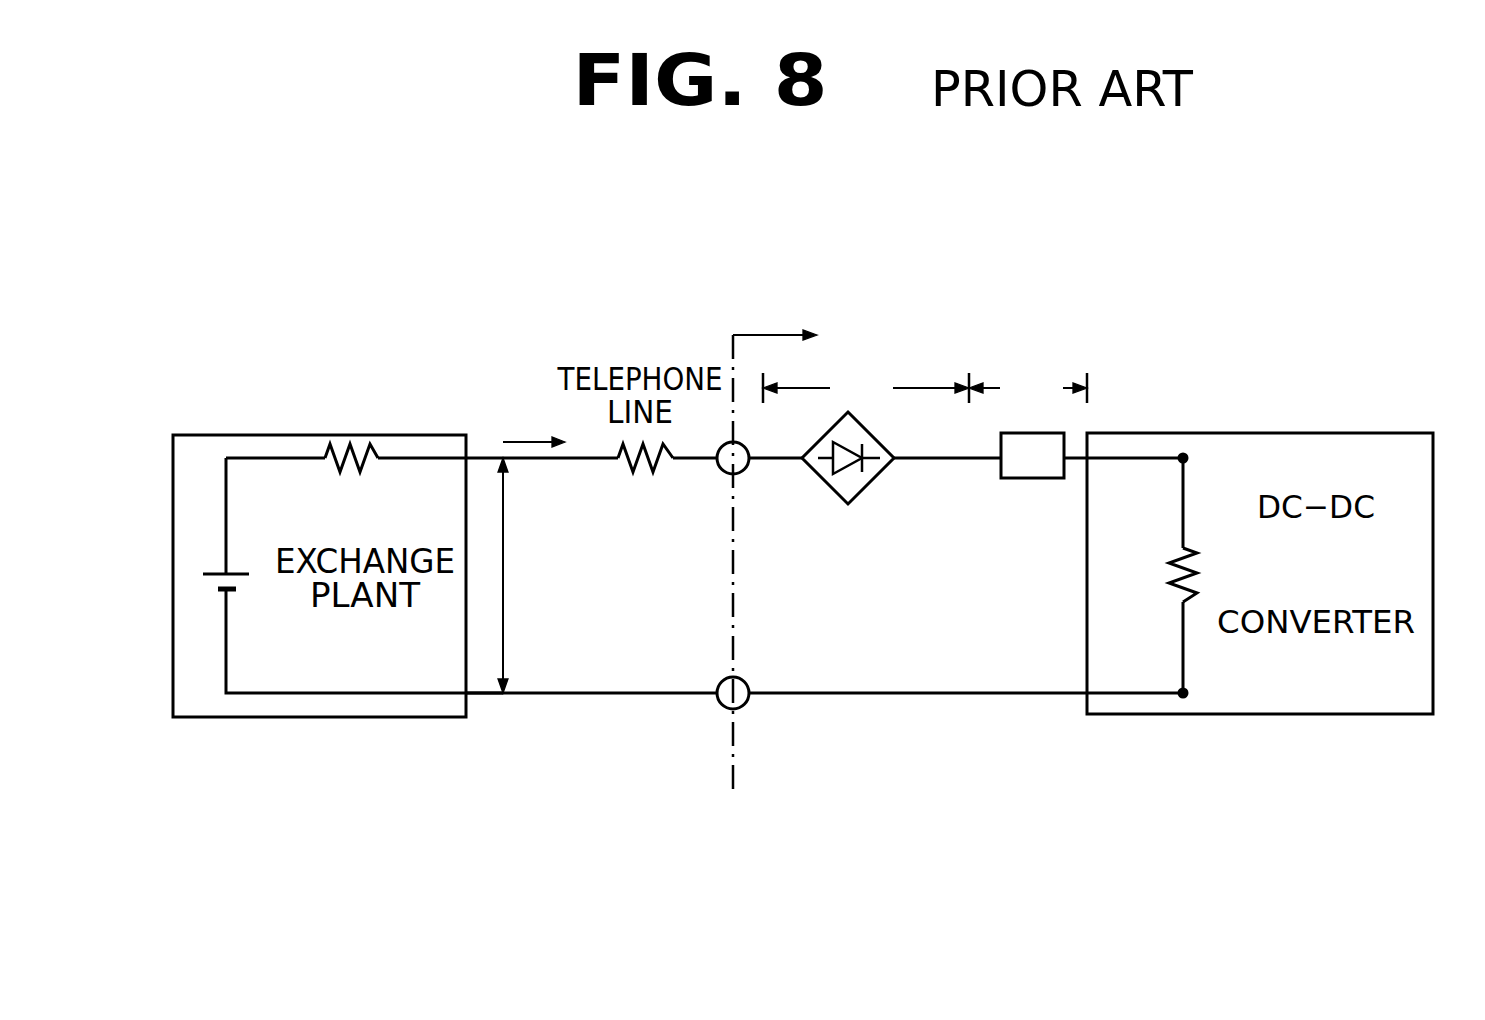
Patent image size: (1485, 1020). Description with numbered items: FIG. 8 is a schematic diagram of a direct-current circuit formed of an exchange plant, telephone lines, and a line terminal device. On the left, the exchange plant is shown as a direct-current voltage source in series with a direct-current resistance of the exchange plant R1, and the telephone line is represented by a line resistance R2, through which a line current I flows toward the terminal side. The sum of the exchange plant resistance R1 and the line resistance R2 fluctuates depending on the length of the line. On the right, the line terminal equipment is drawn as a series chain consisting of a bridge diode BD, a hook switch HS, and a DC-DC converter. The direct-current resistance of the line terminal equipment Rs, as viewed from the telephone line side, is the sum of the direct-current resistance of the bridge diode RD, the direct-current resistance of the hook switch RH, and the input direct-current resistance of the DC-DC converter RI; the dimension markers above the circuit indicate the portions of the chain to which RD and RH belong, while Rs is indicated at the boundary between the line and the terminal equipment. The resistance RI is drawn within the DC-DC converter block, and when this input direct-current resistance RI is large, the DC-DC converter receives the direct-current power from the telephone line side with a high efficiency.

The direct-current resistance of the exchange plant R1 is at (351, 482).
The line resistance R2 is at (645, 482).
The line current I is at (534, 422).
The direct-current resistance of the line terminal equipment Rs is at (775, 316).
The direct-current resistance of the bridge diode RD is at (866, 387).
The direct-current resistance of the hook switch RH is at (1028, 387).
The bridge diode BD is at (863, 466).
The hook switch HS is at (1032, 455).
The input direct-current resistance of the DC-DC converter RI is at (1154, 575).